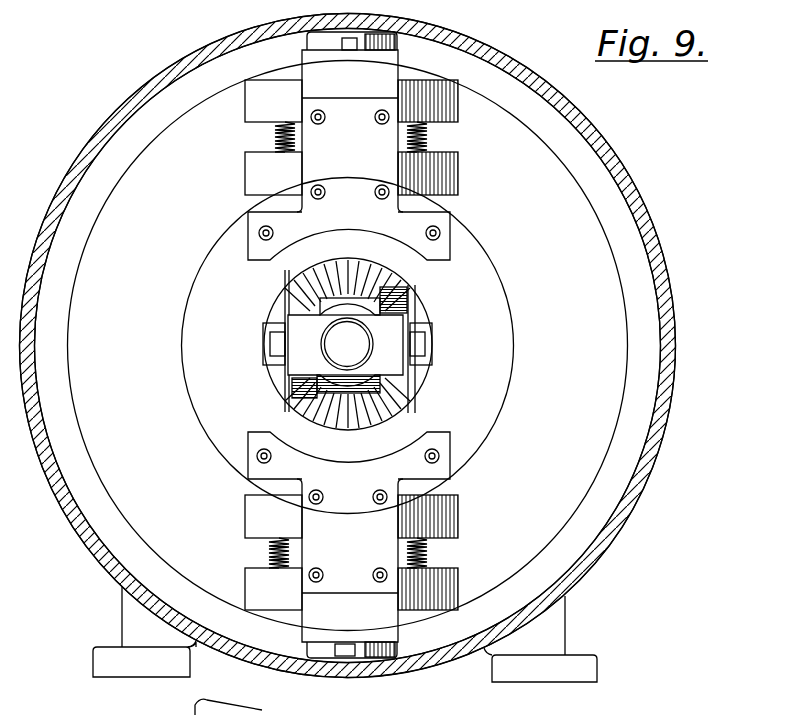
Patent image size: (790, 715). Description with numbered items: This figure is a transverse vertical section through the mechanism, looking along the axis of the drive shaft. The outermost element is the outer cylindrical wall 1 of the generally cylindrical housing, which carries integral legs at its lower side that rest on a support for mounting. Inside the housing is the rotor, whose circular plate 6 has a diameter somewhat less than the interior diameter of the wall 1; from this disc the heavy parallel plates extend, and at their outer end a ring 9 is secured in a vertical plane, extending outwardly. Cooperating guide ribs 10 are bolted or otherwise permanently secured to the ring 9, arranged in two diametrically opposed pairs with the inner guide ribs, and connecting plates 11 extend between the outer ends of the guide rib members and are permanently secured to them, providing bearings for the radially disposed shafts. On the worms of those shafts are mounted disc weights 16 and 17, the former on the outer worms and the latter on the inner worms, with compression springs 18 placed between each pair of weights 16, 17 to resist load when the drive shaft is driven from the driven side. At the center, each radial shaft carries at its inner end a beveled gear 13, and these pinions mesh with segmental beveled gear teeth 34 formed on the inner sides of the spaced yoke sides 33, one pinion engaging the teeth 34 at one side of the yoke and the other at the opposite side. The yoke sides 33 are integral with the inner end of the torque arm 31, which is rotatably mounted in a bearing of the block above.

The outer cylindrical wall 1 is at (670, 321).
The circular plate 6 is at (610, 273).
The ring 9 is at (443, 227).
The guide ribs 10 is at (577, 153).
The connecting plates 11 is at (397, 53).
The beveled gear 13 is at (338, 275).
The disc weights 16 is at (452, 98).
The disc weights 17 is at (448, 181).
The compression springs 18 is at (277, 137).
The torque arm 31 is at (356, 353).
The yoke sides 33 is at (283, 300).
The segmental beveled gear teeth 34 is at (408, 297).